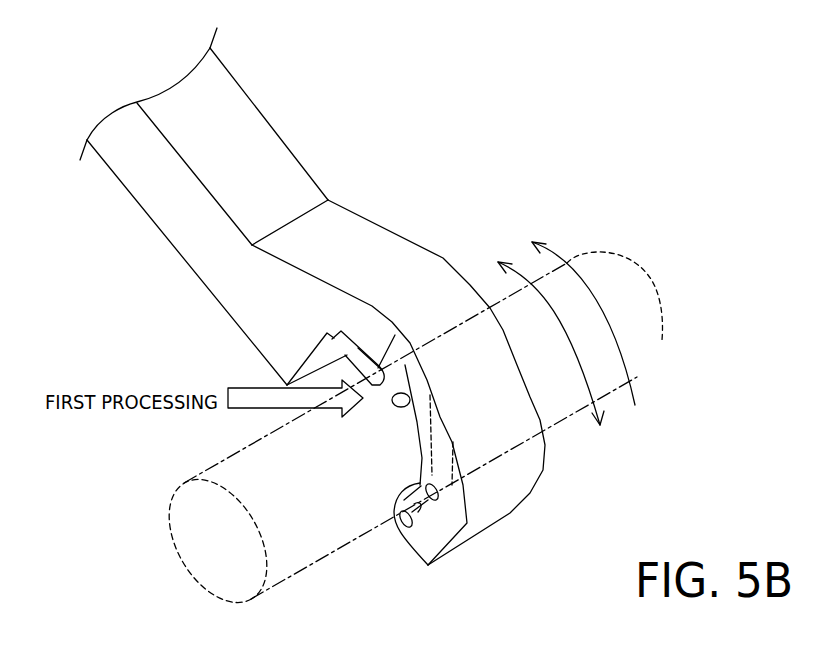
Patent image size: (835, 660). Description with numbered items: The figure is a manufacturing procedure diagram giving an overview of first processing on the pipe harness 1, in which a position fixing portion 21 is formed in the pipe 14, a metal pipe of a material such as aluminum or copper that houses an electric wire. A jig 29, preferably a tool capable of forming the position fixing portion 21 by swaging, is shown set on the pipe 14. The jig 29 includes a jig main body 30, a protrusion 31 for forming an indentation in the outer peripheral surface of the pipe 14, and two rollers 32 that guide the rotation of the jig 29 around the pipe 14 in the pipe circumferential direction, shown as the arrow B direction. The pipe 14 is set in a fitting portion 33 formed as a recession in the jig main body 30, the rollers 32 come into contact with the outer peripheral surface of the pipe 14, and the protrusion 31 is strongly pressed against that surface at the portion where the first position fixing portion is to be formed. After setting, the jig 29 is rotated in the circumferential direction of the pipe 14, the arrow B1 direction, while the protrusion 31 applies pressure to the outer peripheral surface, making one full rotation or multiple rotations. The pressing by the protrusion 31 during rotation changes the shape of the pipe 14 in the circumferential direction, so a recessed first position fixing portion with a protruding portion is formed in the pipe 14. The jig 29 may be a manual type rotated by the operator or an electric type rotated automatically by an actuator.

The pipe harness 1 is at (603, 188).
The pipe 14 is at (210, 472).
The position fixing portion 21 is at (373, 383).
The jig 29 is at (237, 82).
The jig main body 30 is at (268, 147).
The protrusion 31 is at (355, 357).
The rollers 32 is at (396, 520).
The fitting portion 33 is at (410, 398).
The arrow B direction B is at (593, 374).
The arrow B1 direction B1 is at (632, 356).